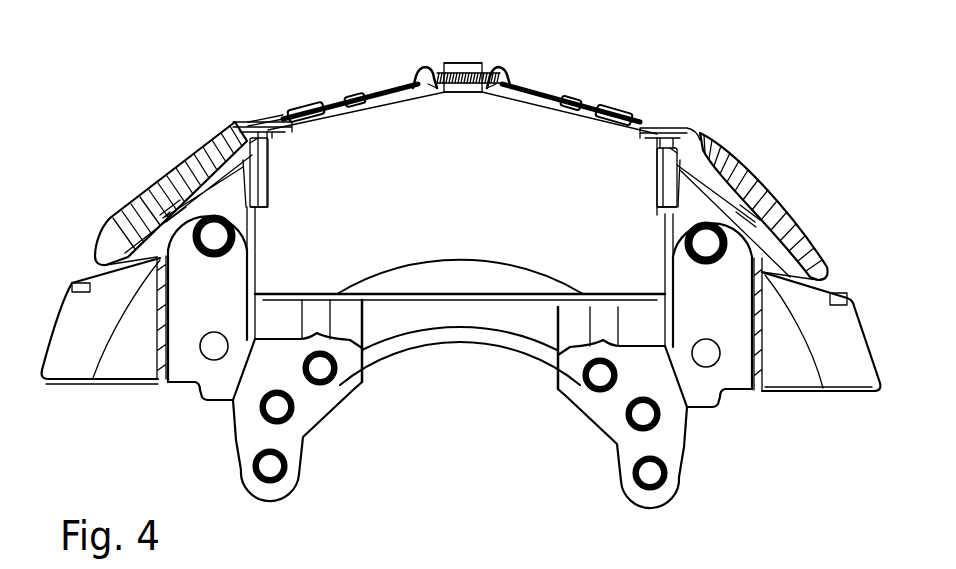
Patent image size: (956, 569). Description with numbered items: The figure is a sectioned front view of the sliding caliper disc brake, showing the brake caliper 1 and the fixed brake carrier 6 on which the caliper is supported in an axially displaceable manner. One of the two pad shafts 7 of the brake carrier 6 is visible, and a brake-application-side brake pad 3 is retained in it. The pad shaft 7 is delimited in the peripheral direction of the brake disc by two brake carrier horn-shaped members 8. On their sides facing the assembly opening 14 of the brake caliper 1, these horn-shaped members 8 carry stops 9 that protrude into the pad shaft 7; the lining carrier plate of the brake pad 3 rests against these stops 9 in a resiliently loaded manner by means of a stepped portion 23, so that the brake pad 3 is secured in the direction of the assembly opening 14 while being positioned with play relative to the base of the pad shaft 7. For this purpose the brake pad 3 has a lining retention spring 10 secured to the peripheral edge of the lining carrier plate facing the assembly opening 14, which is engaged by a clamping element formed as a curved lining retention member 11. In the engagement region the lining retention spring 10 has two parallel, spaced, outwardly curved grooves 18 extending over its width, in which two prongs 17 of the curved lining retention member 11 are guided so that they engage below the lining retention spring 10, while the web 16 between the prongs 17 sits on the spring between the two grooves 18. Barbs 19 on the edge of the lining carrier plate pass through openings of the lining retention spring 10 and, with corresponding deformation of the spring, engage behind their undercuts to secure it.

The brake caliper 1 is at (178, 152).
The brake pad 3 is at (505, 279).
The brake carrier 6 is at (127, 350).
The pad shaft 7 is at (422, 307).
The brake carrier horn-shaped member 8 is at (182, 258).
The stop 9 is at (265, 136).
The lining retention spring 10 is at (540, 95).
The curved lining retention member 11 is at (470, 65).
The assembly opening 14 is at (668, 130).
The web 16 is at (446, 68).
The prong 17 is at (497, 80).
The groove 18 is at (415, 80).
The barb 19 is at (625, 110).
The stepped portion 23 is at (268, 207).